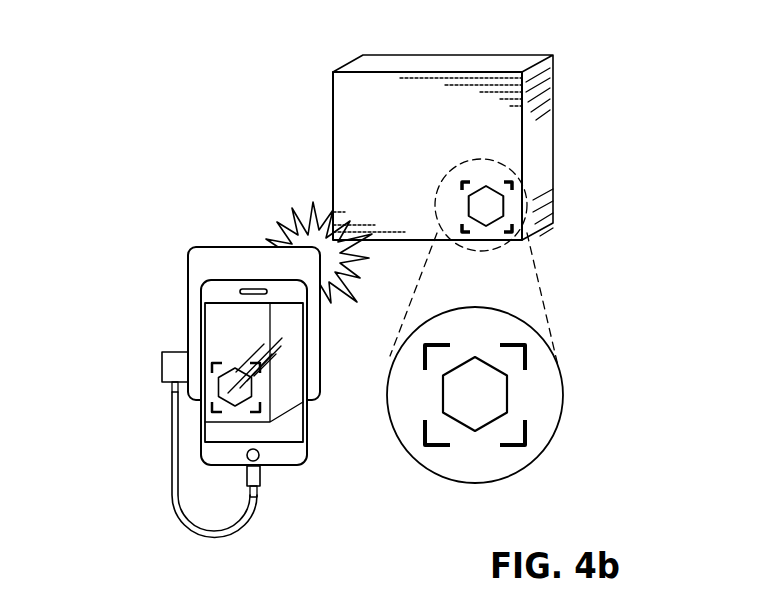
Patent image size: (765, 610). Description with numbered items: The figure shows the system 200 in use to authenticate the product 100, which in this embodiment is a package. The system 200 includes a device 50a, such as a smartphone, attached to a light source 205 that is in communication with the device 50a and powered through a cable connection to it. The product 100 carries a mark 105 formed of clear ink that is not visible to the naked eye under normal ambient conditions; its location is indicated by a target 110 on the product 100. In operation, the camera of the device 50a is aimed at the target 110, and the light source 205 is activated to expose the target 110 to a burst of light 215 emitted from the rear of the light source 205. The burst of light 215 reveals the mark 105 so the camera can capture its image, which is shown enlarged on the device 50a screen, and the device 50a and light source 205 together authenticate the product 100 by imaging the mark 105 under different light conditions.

The product 100 is at (305, 112).
The target 110 is at (527, 190).
The mark 105 is at (507, 395).
The burst of light 215 is at (253, 197).
The system 200 is at (178, 245).
The light source 205 is at (192, 290).
The device 50a is at (310, 470).